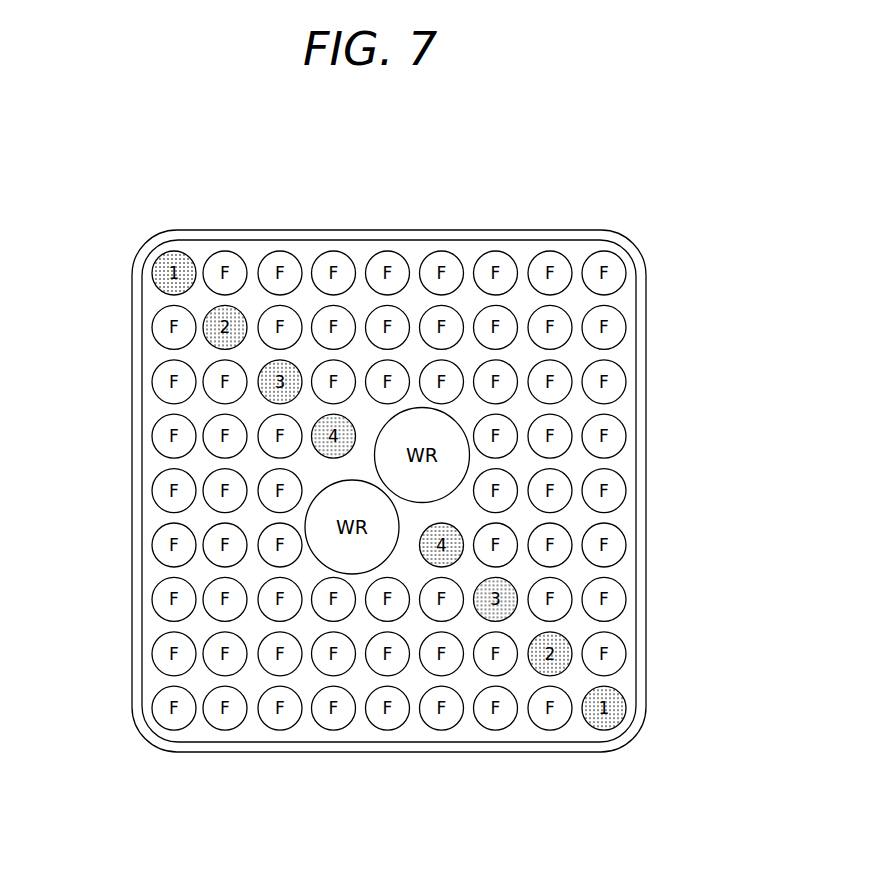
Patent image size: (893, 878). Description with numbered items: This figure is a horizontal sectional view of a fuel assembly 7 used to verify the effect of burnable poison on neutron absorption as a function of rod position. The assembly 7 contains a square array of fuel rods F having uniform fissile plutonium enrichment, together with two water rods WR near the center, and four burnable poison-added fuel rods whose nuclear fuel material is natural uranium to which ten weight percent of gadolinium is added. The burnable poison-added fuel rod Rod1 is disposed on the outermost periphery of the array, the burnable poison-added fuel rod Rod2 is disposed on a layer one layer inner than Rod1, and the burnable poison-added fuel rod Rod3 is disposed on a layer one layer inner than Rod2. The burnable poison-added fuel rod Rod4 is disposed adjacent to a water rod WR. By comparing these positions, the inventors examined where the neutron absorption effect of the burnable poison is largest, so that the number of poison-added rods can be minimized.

The fuel assembly (channel box) 7 is at (647, 380).
The burnable poison-added fuel rod Rod1 is at (174, 251).
The burnable poison-added fuel rod Rod2 is at (211, 347).
The burnable poison-added fuel rod Rod3 is at (510, 586).
The burnable poison-added fuel rod Rod4 is at (457, 532).